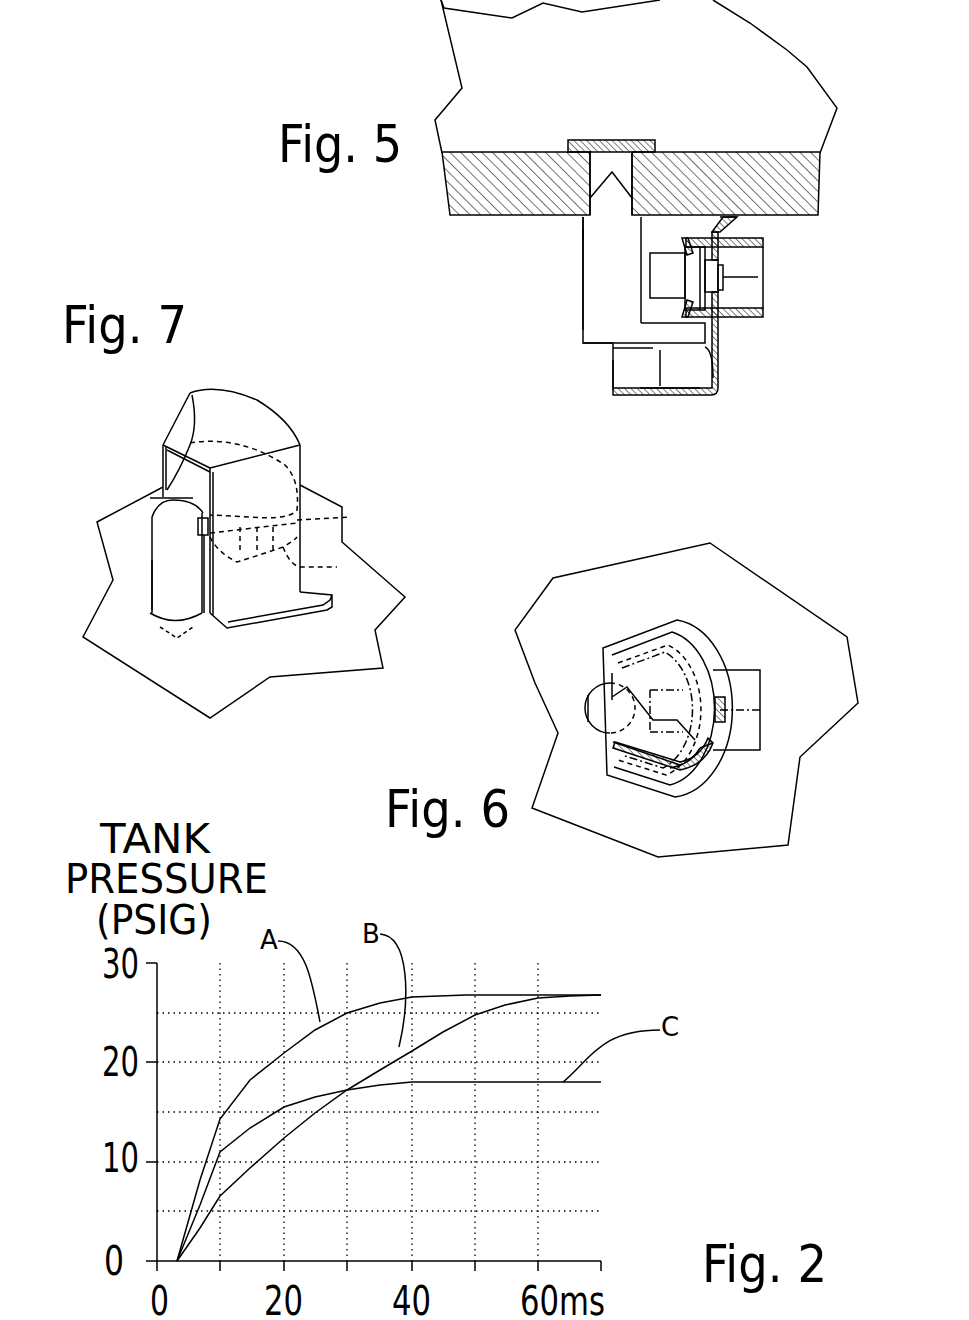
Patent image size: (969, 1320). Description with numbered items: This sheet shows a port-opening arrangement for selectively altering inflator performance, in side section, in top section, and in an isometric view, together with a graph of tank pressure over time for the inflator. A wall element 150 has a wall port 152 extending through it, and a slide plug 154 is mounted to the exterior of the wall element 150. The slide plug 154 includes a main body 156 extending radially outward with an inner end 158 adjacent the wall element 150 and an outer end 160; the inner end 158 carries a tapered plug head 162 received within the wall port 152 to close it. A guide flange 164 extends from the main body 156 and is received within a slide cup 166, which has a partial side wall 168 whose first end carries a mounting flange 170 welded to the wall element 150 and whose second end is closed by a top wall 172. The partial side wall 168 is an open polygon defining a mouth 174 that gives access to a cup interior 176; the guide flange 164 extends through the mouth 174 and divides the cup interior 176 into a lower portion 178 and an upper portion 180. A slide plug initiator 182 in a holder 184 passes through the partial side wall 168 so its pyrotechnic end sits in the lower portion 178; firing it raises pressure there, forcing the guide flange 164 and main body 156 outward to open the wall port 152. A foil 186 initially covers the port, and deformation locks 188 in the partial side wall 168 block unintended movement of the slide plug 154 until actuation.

In FIG. 5, the wall element 150 is at (750, 152).
In FIG. 7, the wall element 150 is at (160, 665).
In FIG. 6, the wall element 150 is at (753, 603).
In FIG. 5, the wall port 152 is at (603, 167).
In FIG. 5, the slide plug 154 is at (583, 292).
In FIG. 7, the slide plug 154 is at (163, 590).
In FIG. 6, the slide plug 154 is at (587, 703).
In FIG. 5, the main body 156 is at (583, 258).
In FIG. 7, the main body 156 is at (163, 550).
In FIG. 6, the main body 156 is at (587, 720).
In FIG. 5, the inner end 158 is at (583, 228).
In FIG. 5, the outer end 160 is at (583, 343).
In FIG. 5, the plug head 162 is at (620, 160).
In FIG. 5, the guide flange 164 is at (718, 378).
In FIG. 7, the guide flange 164 is at (193, 498).
In FIG. 6, the guide flange 164 is at (667, 743).
In FIG. 5, the slide cup 166 is at (717, 393).
In FIG. 6, the slide cup 166 is at (710, 650).
In FIG. 5, the partial side wall 168 is at (720, 345).
In FIG. 7, the partial side wall 168 is at (288, 470).
In FIG. 6, the partial side wall 168 is at (695, 773).
In FIG. 5, the mounting flange 170 is at (733, 220).
In FIG. 7, the mounting flange 170 is at (275, 607).
In FIG. 6, the mounting flange 170 is at (663, 630).
In FIG. 5, the top wall 172 is at (678, 397).
In FIG. 7, the top wall 172 is at (247, 415).
In FIG. 6, the top wall 172 is at (673, 668).
In FIG. 5, the mouth 174 is at (613, 380).
In FIG. 7, the mouth 174 is at (163, 467).
In FIG. 6, the mouth 174 is at (612, 678).
In FIG. 5, the cup interior 176 is at (635, 367).
In FIG. 6, the cup interior 176 is at (680, 780).
In FIG. 5, the lower portion 178 is at (667, 235).
In FIG. 7, the lower portion 178 is at (205, 620).
In FIG. 5, the upper portion 180 is at (673, 377).
In FIG. 7, the upper portion 180 is at (194, 420).
In FIG. 5, the slide plug initiator 182 is at (708, 275).
In FIG. 7, the slide plug initiator 182 is at (337, 567).
In FIG. 6, the slide plug initiator 182 is at (760, 673).
In FIG. 5, the holder 184 is at (740, 303).
In FIG. 7, the holder 184 is at (350, 517).
In FIG. 6, the holder 184 is at (753, 733).
In FIG. 5, the foil 186 is at (612, 142).
In FIG. 5, the deformation locks 188 is at (653, 348).
In FIG. 6, the deformation locks 188 is at (617, 743).